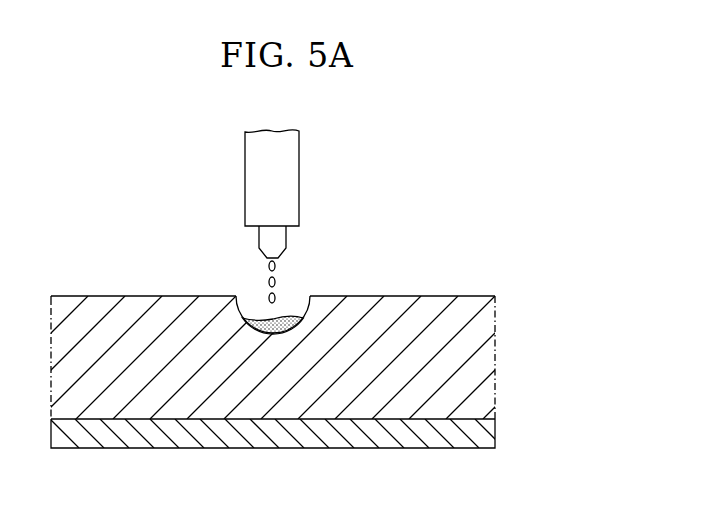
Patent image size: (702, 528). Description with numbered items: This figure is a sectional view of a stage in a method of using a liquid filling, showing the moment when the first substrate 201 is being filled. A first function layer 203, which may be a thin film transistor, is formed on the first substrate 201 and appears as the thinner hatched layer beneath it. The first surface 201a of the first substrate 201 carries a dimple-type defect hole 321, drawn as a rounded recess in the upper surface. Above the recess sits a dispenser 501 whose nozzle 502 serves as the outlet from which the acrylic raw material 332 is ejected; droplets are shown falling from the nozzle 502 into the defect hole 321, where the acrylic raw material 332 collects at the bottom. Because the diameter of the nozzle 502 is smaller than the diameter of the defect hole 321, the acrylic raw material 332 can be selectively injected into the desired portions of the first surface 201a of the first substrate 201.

The dispenser 501 is at (290, 174).
The nozzle 502 is at (280, 237).
The first substrate 201 is at (478, 364).
The first surface 201a is at (480, 300).
The acrylic raw material 332 is at (262, 321).
The defect holes 321 is at (288, 312).
The first function layer 203 is at (480, 432).